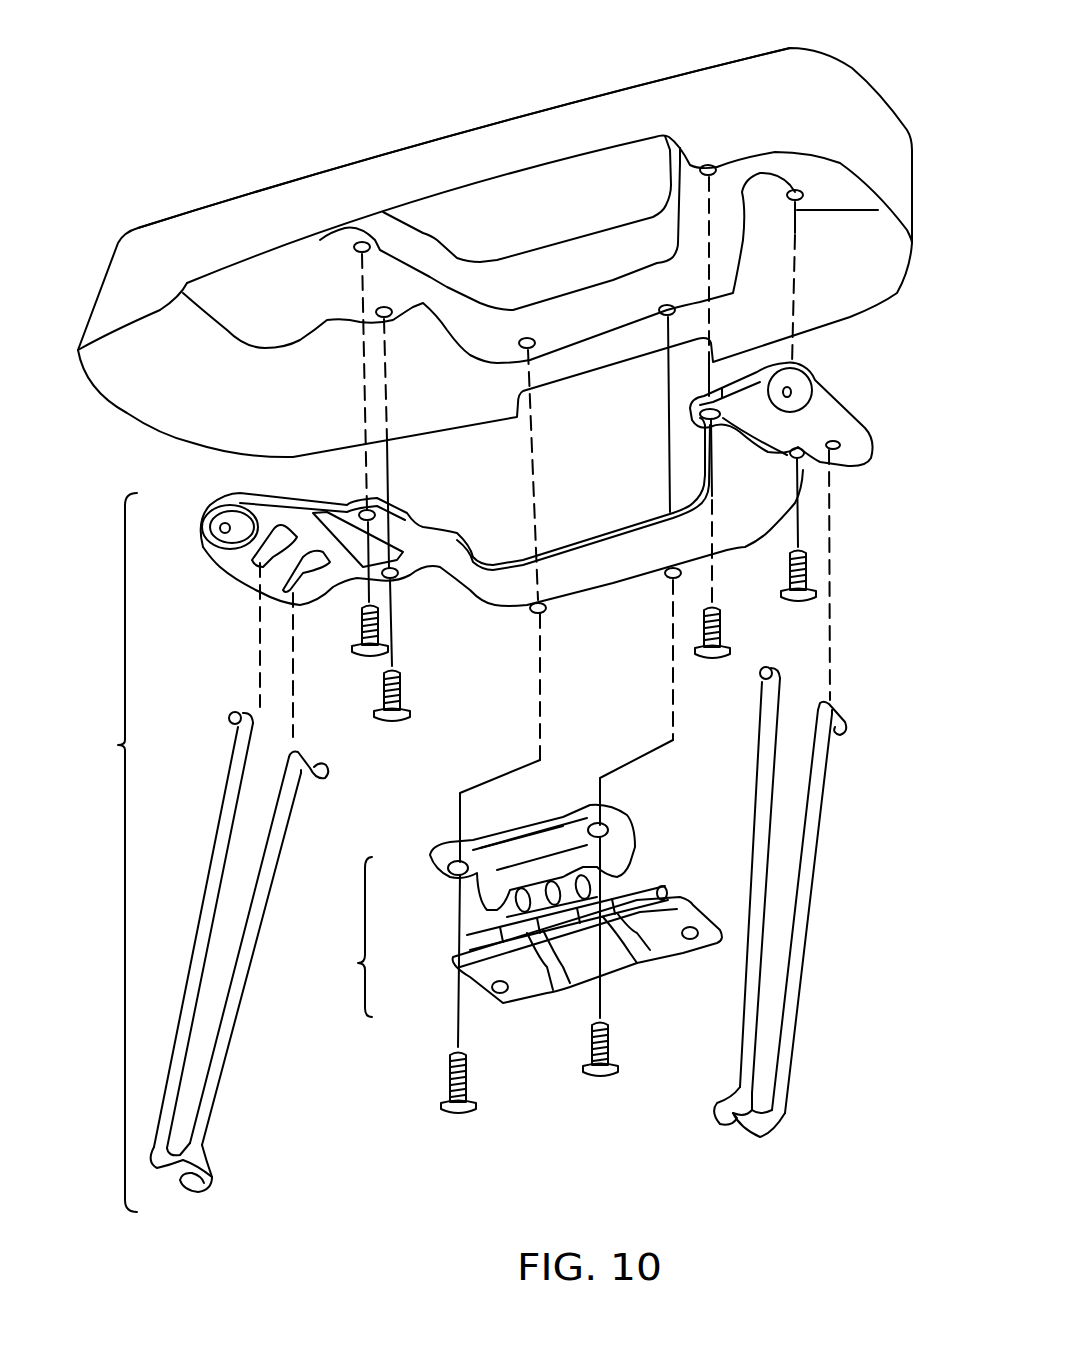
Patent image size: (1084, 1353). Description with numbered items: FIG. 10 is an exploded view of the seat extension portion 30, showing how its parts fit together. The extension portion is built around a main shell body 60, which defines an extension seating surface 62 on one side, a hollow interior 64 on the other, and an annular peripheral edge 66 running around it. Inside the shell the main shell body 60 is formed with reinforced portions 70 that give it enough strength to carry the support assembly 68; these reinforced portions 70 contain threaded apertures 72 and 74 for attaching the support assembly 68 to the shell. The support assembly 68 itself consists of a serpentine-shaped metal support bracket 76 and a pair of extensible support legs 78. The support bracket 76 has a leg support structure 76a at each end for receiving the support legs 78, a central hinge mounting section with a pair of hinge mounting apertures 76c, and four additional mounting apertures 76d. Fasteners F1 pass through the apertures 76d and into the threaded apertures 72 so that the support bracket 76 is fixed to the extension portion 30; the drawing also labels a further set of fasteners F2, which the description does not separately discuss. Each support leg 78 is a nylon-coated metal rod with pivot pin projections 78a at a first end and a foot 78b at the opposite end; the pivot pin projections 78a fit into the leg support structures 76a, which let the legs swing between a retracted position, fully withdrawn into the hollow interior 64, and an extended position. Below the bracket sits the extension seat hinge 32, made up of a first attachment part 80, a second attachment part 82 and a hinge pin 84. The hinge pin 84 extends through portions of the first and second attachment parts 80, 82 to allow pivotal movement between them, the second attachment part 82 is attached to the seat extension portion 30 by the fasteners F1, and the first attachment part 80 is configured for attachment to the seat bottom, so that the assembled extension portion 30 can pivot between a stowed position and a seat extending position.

The seat extension portion 30 is at (697, 71).
The main shell body 60 is at (850, 312).
The extension seating surface 62 is at (493, 122).
The hollow interior 64 is at (194, 382).
The annular peripheral edge 66 is at (210, 232).
The reinforced portions 70 is at (293, 310).
The threaded apertures 72 is at (366, 252).
The threaded apertures 74 is at (662, 305).
The support bracket 76 is at (236, 584).
The leg support structures 76a is at (232, 560).
The hinge mounting apertures 76c is at (665, 570).
The additional mounting apertures 76d is at (407, 538).
The support assembly 68 is at (107, 852).
The extensible support legs 78 is at (204, 933).
The pivot pin projections 78a is at (232, 715).
The foot 78b is at (204, 1181).
The extension seat hinge 32 is at (345, 937).
The first attachment part 80 is at (477, 977).
The second attachment part 82 is at (440, 863).
The hinge pin 84 is at (470, 940).
The fasteners F1 is at (470, 1069).
The fasteners F2 is at (358, 620).